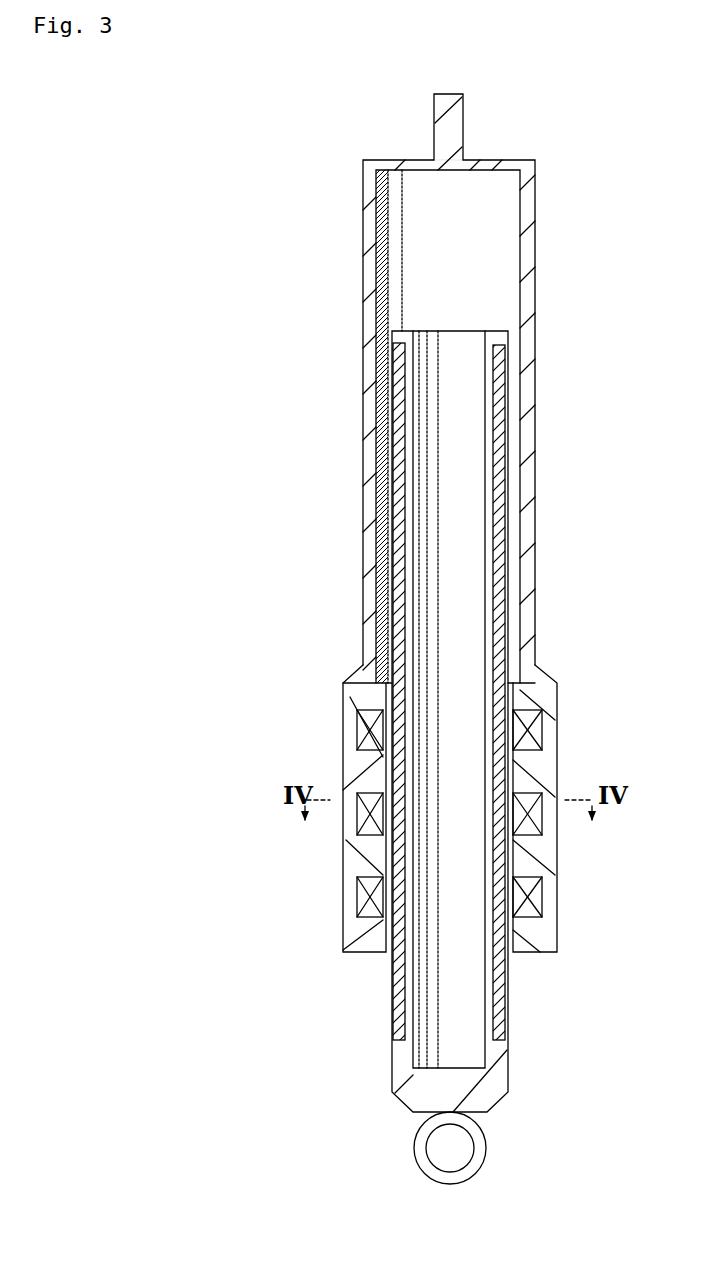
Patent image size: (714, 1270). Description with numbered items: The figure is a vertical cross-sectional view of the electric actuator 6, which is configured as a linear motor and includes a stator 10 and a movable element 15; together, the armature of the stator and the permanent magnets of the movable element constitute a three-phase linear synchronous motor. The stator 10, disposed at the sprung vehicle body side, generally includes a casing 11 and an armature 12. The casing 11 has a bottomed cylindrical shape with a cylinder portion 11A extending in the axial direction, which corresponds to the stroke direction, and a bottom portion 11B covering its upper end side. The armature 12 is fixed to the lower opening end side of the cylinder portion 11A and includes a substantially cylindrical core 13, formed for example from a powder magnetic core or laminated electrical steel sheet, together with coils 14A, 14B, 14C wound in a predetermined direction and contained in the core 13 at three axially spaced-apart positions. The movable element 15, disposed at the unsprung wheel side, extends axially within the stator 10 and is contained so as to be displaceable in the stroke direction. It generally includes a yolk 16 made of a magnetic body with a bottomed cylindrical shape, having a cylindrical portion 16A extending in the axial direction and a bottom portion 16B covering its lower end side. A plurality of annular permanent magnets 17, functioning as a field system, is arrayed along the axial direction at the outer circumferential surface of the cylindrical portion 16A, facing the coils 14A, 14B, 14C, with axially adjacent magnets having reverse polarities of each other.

The electric actuator 6 is at (550, 217).
The stator 10 is at (478, 388).
The casing 11 is at (527, 400).
The cylinder portion 11A is at (527, 527).
The bottom portion 11B is at (392, 172).
The armature 12 is at (451, 808).
The core 13 is at (550, 758).
The coil 14A is at (357, 716).
The coil 14B is at (357, 826).
The coil 14C is at (357, 900).
The movable element 15 is at (443, 757).
The yolk 16 is at (505, 1070).
The cylindrical portion 16A is at (393, 395).
The bottom portion 16B is at (485, 1103).
The permanent magnet 17 is at (397, 362).